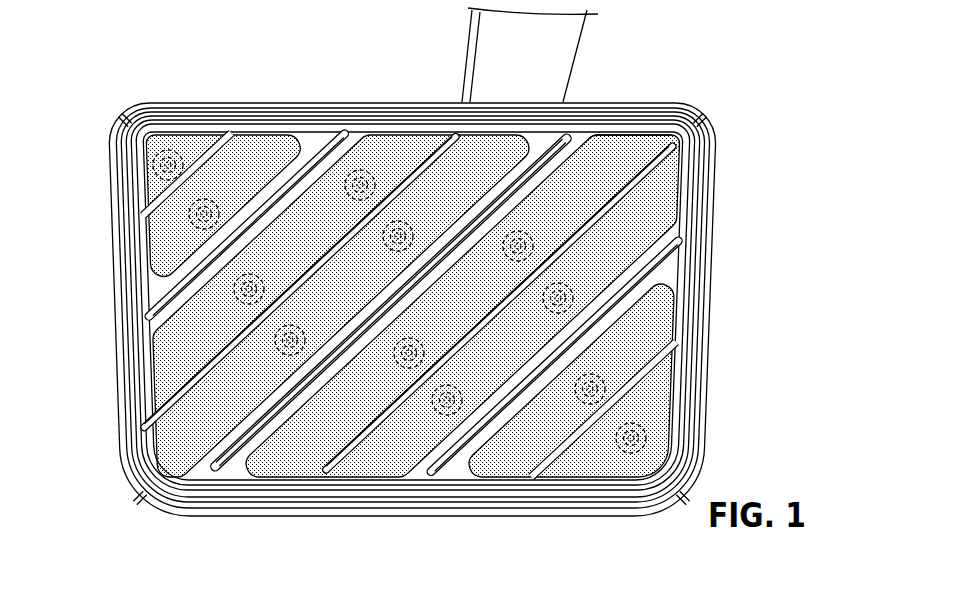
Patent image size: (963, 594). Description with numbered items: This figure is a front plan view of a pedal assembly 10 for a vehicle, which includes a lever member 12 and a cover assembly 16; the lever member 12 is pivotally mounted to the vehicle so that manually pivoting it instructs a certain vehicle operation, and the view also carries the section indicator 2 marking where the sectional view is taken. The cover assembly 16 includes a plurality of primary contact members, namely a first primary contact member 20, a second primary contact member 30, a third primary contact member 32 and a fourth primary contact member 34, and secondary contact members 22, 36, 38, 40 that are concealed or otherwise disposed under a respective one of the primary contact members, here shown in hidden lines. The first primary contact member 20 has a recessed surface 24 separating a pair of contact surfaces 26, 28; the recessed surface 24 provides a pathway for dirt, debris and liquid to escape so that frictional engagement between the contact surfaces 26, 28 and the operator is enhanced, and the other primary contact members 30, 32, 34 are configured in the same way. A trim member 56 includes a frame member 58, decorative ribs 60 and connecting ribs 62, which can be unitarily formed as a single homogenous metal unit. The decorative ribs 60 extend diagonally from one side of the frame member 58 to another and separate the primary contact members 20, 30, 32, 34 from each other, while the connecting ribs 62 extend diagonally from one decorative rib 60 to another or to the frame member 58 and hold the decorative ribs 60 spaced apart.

The pedal assembly 10 is at (311, 76).
The lever member 12 is at (582, 34).
The cover assembly 16 is at (736, 86).
The first primary contact member 20 is at (664, 198).
The first secondary contact member 22 is at (590, 102).
The recessed surface 24 is at (662, 162).
The contact surface 26 is at (609, 160).
The contact surface 28 is at (462, 306).
The second primary contact member 30 is at (172, 350).
The third primary contact member 32 is at (160, 266).
The fourth primary contact member 34 is at (656, 388).
The second secondary contact member 36 is at (428, 242).
The third secondary contact member 38 is at (130, 172).
The fourth secondary contact member 40 is at (586, 415).
The trim member 56 is at (116, 100).
The frame member 58 is at (120, 441).
The decorative ribs 60 is at (320, 138).
The connecting ribs 62 is at (280, 190).
The section line 2- 2 is at (494, 67).